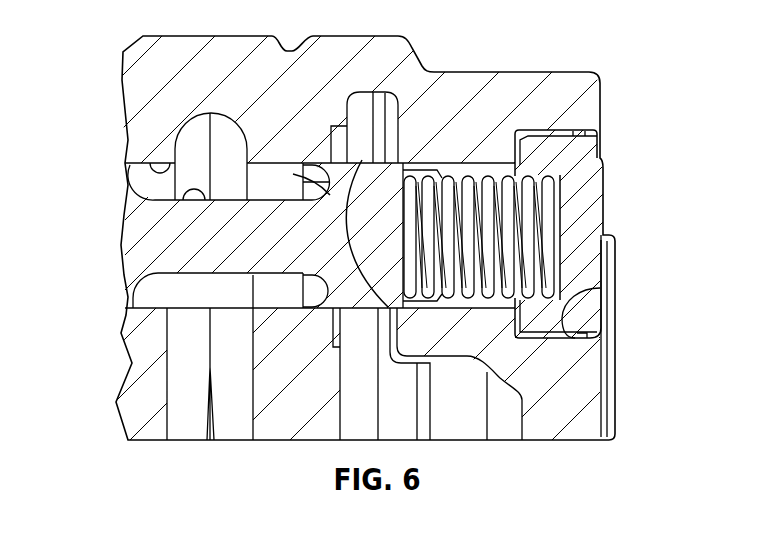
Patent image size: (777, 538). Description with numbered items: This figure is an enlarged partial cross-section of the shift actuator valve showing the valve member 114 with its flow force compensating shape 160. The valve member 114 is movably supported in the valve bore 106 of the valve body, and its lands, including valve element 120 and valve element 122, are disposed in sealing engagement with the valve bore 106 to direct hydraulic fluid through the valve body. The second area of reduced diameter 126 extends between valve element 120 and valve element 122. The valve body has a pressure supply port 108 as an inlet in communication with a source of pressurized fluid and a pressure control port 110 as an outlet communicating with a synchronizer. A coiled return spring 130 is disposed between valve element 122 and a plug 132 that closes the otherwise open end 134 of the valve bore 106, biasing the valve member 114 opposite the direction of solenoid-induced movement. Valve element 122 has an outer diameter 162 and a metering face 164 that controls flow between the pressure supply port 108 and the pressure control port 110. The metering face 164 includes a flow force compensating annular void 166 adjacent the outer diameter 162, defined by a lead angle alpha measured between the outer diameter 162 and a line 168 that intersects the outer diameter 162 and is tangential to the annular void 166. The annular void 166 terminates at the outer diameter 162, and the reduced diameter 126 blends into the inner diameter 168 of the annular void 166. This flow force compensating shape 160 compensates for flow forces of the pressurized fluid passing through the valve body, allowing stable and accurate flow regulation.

The valve bore 106 is at (180, 163).
The pressure supply port 108 is at (167, 413).
The pressure control port 110 is at (503, 425).
The valve member 114 is at (143, 238).
The valve element 120 is at (124, 152).
The valve element 122 is at (400, 163).
The second area of reduced diameter 126 is at (207, 192).
The coiled return spring 130 is at (494, 185).
The plug 132 is at (585, 185).
The open end 134 is at (583, 289).
The flow force compensating shape 160 is at (290, 172).
The outer diameter 162 is at (332, 165).
The metering face 164 is at (302, 285).
The flow force compensating annular void 166 is at (387, 275).
The line tangential to the annular void 168 is at (292, 172).